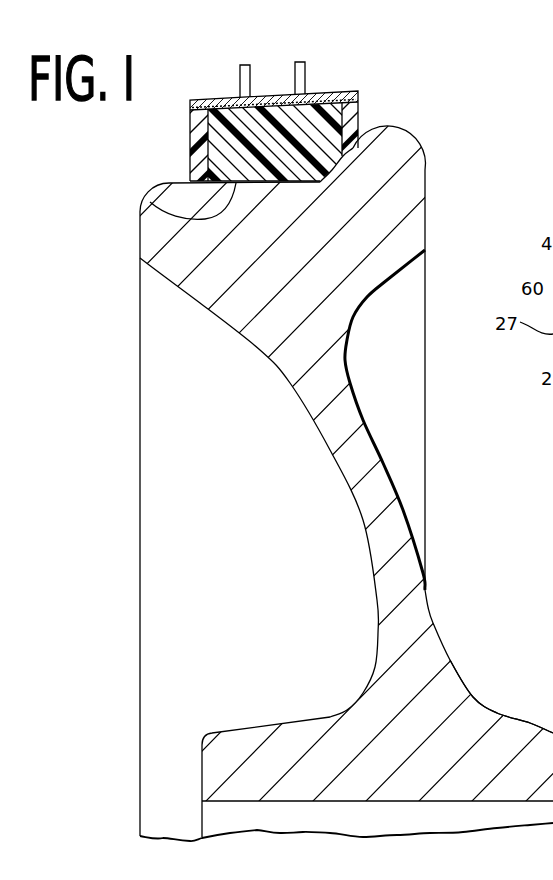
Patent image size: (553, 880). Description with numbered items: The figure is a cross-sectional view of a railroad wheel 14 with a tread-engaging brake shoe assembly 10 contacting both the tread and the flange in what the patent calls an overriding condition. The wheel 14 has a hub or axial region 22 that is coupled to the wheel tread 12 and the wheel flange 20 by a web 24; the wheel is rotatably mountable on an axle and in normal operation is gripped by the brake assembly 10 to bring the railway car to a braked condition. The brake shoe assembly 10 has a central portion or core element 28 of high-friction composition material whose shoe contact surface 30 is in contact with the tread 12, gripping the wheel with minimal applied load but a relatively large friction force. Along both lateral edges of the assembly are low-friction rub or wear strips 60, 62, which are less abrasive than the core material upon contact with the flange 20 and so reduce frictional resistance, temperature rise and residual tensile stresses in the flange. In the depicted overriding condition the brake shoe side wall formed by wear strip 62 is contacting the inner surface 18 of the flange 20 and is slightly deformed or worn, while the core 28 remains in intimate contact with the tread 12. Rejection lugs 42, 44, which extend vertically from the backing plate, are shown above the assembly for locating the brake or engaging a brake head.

The brake shoe assembly 10 is at (356, 92).
The tread 12 is at (180, 182).
The railroad wheel 14 is at (427, 191).
The inner surface 18 is at (415, 140).
The wheel flange 20 is at (358, 152).
The hub or axial region 22 is at (503, 713).
The web 24 is at (407, 512).
The core element 28 is at (269, 104).
The shoe contact surface 30 is at (150, 202).
The rejection lug 42 is at (240, 84).
The rejection lug 44 is at (305, 78).
The wear strip 60 is at (190, 148).
The wear strip 62 is at (357, 105).